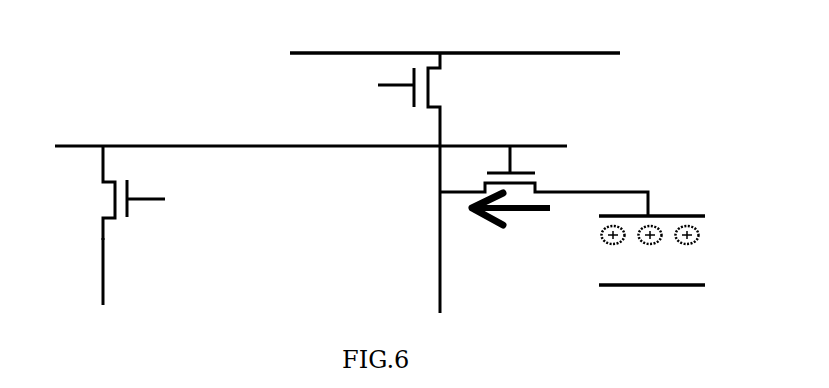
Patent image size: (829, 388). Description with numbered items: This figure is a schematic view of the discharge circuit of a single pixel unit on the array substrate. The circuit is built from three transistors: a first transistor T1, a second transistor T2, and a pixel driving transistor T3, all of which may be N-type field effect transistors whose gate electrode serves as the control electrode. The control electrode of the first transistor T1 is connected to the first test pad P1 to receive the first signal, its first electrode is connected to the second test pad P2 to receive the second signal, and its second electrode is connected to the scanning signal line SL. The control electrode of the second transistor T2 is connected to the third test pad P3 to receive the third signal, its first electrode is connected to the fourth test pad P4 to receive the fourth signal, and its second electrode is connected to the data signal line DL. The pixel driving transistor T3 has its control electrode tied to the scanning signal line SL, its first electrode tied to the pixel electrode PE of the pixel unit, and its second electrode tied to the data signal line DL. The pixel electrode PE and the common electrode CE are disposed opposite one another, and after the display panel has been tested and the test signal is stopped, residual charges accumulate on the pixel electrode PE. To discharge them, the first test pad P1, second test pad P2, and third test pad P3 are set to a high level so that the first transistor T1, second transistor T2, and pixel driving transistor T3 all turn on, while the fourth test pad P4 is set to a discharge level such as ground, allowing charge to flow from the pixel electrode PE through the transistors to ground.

The scanning signal line SL is at (299, 148).
The data signal line DL is at (422, 230).
The first transistor T1 is at (91, 193).
The second transistor T2 is at (445, 99).
The pixel driving transistor T3 is at (544, 185).
The first test pad P1 is at (160, 200).
The second test pad P2 is at (122, 271).
The third test pad P3 is at (383, 85).
The fourth test pad P4 is at (455, 69).
The pixel electrode PE is at (652, 218).
The common electrode CE is at (652, 298).